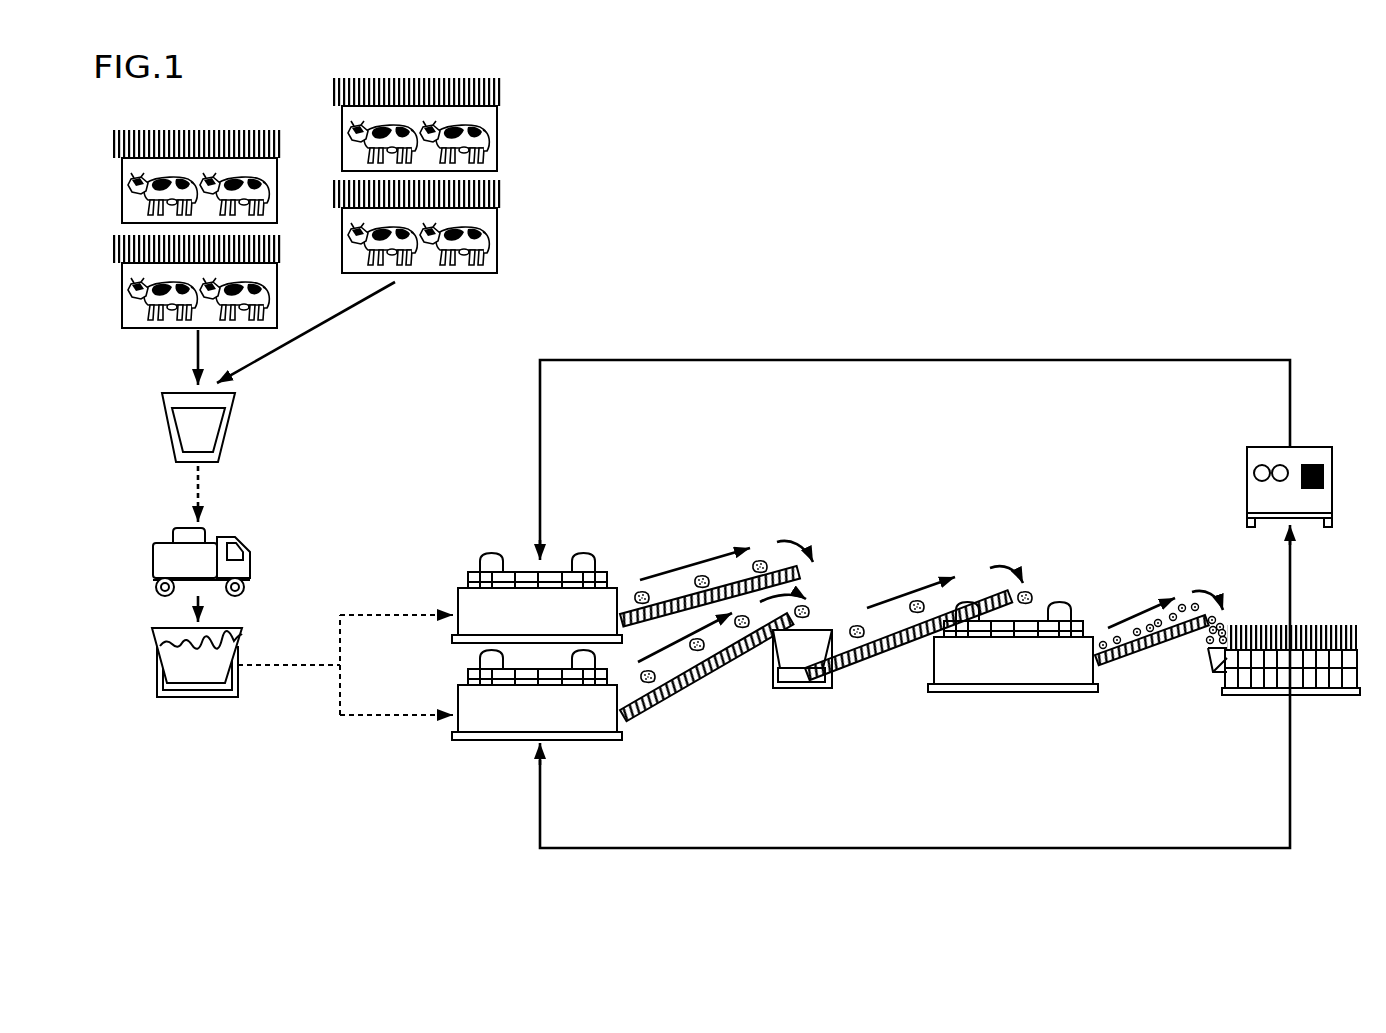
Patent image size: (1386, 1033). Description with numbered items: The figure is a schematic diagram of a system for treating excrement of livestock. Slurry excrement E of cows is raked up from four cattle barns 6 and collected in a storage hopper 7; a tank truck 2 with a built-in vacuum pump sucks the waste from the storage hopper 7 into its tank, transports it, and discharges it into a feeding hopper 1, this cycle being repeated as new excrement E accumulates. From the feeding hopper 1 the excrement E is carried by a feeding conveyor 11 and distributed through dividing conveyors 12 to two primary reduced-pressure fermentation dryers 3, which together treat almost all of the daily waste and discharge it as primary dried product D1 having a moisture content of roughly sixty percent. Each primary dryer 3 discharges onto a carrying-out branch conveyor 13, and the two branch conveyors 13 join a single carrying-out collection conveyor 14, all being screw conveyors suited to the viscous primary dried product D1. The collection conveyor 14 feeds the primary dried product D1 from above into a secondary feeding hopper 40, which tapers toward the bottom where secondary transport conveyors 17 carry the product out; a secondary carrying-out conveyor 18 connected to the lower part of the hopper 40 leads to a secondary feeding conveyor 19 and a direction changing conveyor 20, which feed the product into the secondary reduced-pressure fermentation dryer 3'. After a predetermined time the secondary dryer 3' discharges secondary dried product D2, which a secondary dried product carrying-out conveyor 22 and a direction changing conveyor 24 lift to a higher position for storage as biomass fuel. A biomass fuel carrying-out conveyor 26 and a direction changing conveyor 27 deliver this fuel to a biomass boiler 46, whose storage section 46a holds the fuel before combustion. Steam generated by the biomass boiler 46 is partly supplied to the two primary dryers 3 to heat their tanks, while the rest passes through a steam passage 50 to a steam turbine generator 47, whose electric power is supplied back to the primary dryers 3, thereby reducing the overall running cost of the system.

The feeding hopper 1 is at (200, 654).
The tank truck 2 is at (250, 542).
The primary reduced-pressure fermentation dryer 3 is at (537, 647).
The secondary reduced-pressure fermentation dryer 3' is at (1013, 690).
The cattle barn 6 is at (218, 133).
The storage hopper 7 is at (232, 429).
The feeding conveyor 11 is at (290, 668).
The dividing conveyor 12 is at (386, 615).
The carrying-out branch conveyor 13 is at (710, 635).
The carrying-out collection conveyor 14 is at (688, 720).
The secondary transport conveyor 17 is at (908, 668).
The secondary carrying-out conveyor 18 is at (908, 668).
The secondary feeding conveyor 19 is at (918, 656).
The direction changing conveyor 20 is at (887, 647).
The secondary dried product carrying-out conveyor 22 is at (1145, 679).
The direction changing conveyor 24 is at (1145, 670).
The biomass fuel carrying-out conveyor 26 is at (1145, 679).
The direction changing conveyor for biomass fuel 27 is at (1145, 647).
The secondary feeding hopper 40 is at (798, 692).
The biomass boiler 46 is at (1279, 706).
The storage section 46a is at (1210, 672).
The steam turbine generator 47 is at (1317, 447).
The steam passage 50 is at (1293, 580).
The primary dried product D1 is at (762, 560).
The secondary dried product D2 is at (1137, 630).
The excrement E is at (190, 662).